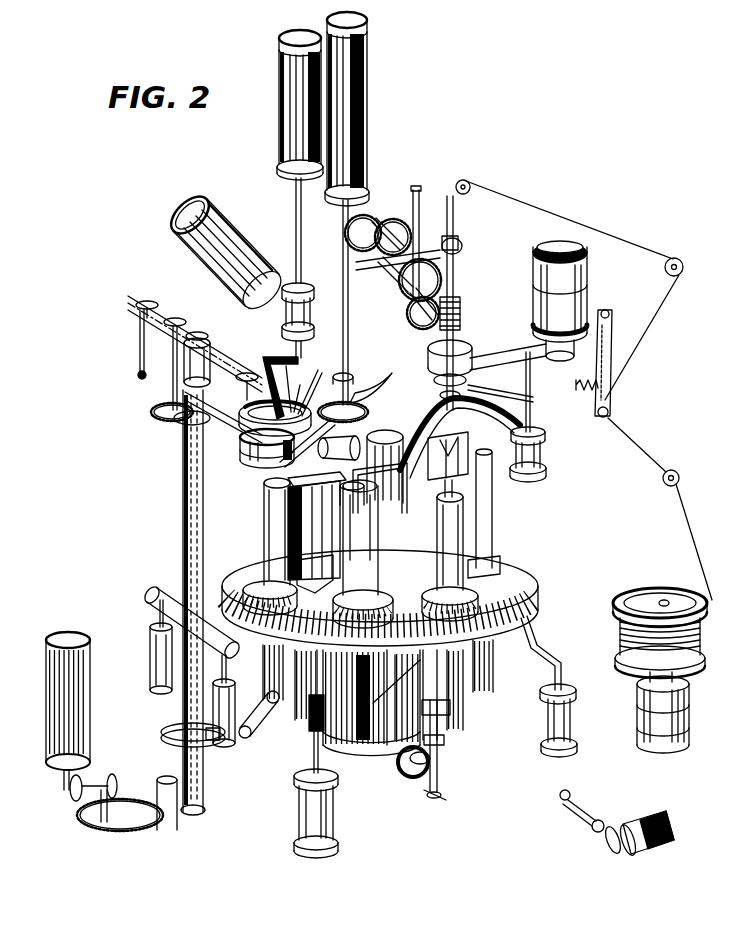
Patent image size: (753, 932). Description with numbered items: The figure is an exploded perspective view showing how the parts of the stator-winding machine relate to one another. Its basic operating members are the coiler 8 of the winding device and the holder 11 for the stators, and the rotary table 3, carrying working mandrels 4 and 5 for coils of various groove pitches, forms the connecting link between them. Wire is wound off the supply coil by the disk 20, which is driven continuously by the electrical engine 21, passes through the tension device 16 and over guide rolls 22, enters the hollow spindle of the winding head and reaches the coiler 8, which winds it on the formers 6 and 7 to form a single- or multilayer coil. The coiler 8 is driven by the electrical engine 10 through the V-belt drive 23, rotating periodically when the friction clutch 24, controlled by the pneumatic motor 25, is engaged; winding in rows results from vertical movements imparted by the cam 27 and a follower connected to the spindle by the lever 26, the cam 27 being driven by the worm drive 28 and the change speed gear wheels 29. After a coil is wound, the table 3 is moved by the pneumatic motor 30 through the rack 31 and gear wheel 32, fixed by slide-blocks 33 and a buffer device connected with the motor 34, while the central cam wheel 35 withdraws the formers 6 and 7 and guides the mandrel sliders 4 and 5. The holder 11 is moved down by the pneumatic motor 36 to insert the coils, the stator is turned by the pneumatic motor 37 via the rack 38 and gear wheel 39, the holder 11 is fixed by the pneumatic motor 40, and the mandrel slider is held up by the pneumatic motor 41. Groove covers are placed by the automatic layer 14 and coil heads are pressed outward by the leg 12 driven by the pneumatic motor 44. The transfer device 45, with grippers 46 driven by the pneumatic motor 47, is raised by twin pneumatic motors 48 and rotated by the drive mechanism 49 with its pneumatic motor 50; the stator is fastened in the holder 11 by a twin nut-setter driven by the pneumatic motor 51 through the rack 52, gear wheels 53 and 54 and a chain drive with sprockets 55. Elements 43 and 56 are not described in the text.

The rotary table 3 is at (526, 583).
The working mandrel 4 is at (515, 564).
The working mandrel 5 is at (485, 513).
The former 6 is at (443, 470).
The former 7 is at (487, 533).
The coiler 8 is at (488, 430).
The electrical engine 10 is at (548, 243).
The stator holder 11 is at (270, 452).
The leg 12 is at (296, 396).
The automatic layer 14 is at (487, 501).
The tension device 16 is at (612, 330).
The disk 20 is at (618, 603).
The electrical engine 21 is at (652, 723).
The guide rolls 22 is at (678, 277).
The V-belt drive 23 is at (600, 366).
The friction clutch 24 is at (470, 372).
The pneumatic motor 25 is at (548, 422).
The lever 26 is at (430, 235).
The cam 27 is at (407, 293).
The worm drive 28 is at (483, 300).
The change speed gear wheels 29 is at (395, 232).
The pneumatic motor 30 is at (395, 778).
The rack 31 is at (441, 797).
The gear wheel 32 is at (448, 722).
The slide-blocks 33 is at (528, 612).
The motor 34 is at (575, 740).
The central cam wheel 35 is at (378, 740).
The pneumatic motor 36 is at (338, 82).
The pneumatic motor 37 is at (178, 213).
The rack 38 is at (340, 345).
The gear wheel 39 is at (372, 386).
The pneumatic motor 40 is at (350, 416).
The pneumatic motor 41 is at (300, 812).
The spool 43 is at (295, 318).
The pneumatic motor 44 is at (292, 112).
The transfer device 45 is at (204, 506).
The grippers 46 is at (246, 456).
The pneumatic motor 47 is at (205, 368).
The twin pneumatic motors 48 is at (157, 651).
The drive mechanism 49 is at (182, 728).
The pneumatic motor 50 is at (248, 737).
The pneumatic motor 51 is at (58, 645).
The rack 52 is at (64, 783).
The gear wheel 53 is at (100, 795).
The gear wheel 54 is at (190, 418).
The sprockets 55 is at (145, 306).
The pin assembly 56 is at (566, 808).